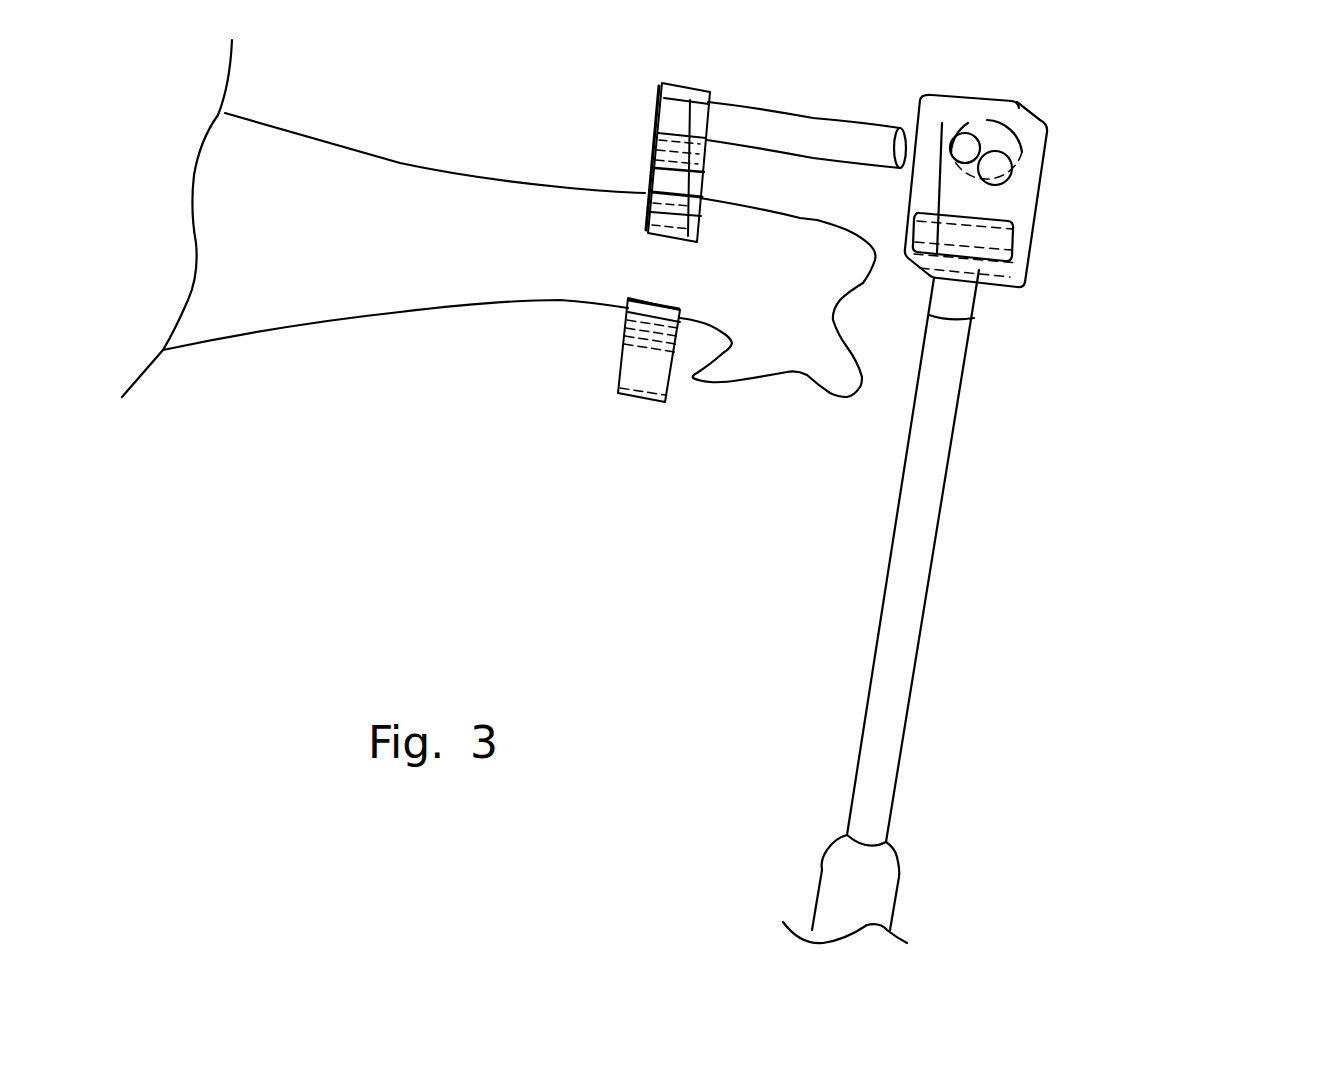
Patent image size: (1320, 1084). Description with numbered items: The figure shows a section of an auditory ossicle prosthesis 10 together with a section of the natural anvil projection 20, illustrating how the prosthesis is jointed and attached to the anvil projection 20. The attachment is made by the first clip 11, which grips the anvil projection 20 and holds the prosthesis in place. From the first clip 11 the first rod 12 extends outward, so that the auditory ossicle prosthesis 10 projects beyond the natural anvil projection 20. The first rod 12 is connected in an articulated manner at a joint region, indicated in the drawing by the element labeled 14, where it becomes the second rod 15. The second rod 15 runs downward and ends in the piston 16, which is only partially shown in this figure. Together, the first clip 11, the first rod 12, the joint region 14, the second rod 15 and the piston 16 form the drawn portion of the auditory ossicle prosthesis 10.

The auditory ossicle prosthesis 10 is at (1183, 309).
The first clip 11 is at (665, 158).
The first rod 12 is at (777, 128).
The bracket 14 is at (1070, 199).
The second rod 15 is at (912, 601).
The piston 16 is at (846, 901).
The anvil projection 20 is at (485, 188).